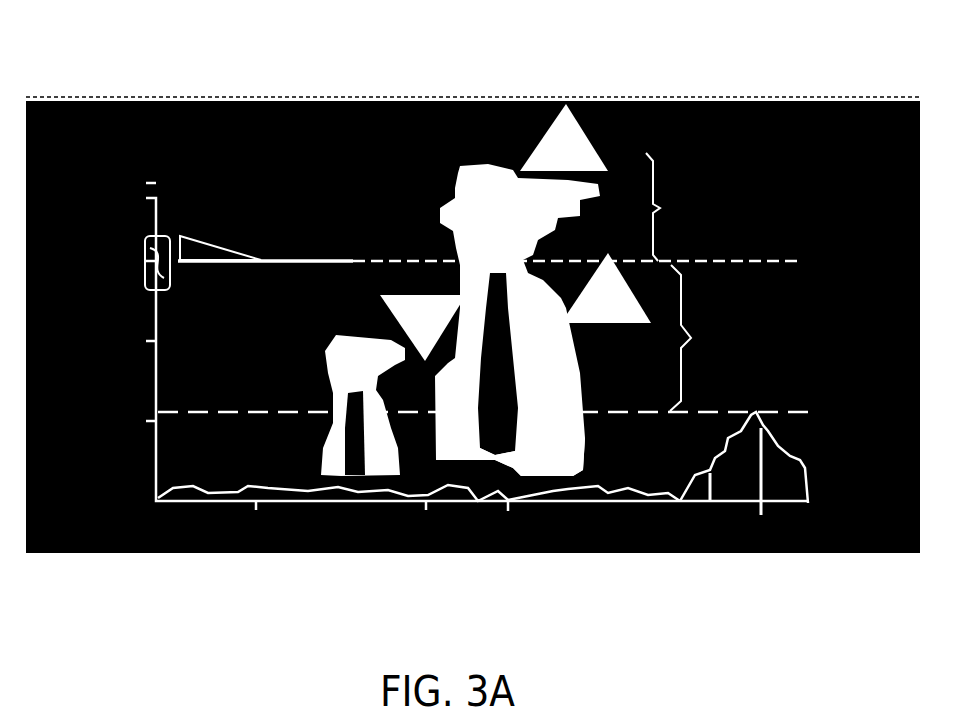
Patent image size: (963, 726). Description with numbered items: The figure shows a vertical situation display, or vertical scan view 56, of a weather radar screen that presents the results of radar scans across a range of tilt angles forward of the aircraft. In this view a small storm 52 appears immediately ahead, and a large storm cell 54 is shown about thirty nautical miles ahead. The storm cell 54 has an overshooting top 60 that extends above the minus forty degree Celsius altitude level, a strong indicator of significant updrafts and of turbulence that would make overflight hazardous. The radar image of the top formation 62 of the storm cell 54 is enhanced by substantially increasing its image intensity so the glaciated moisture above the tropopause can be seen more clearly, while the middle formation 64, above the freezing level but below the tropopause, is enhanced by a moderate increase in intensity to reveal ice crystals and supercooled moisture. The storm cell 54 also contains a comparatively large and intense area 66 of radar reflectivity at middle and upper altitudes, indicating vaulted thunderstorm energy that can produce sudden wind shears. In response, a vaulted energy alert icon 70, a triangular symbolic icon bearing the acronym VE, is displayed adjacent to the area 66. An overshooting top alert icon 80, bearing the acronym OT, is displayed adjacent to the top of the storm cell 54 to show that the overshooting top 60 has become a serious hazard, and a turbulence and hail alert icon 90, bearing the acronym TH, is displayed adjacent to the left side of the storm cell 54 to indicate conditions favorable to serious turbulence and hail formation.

The small storm 52 is at (342, 452).
The large storm cell 54 is at (482, 448).
The vertical scan view 56 is at (750, 600).
The overshooting top 60 is at (485, 172).
The top formation 62 is at (652, 200).
The middle formation 64 is at (683, 330).
The area of radar reflectivity 66 is at (495, 390).
The vaulted energy alert icon 70 is at (622, 313).
The overshooting top alert icon 80 is at (575, 122).
The turbulence and hail alert icon 90 is at (390, 287).